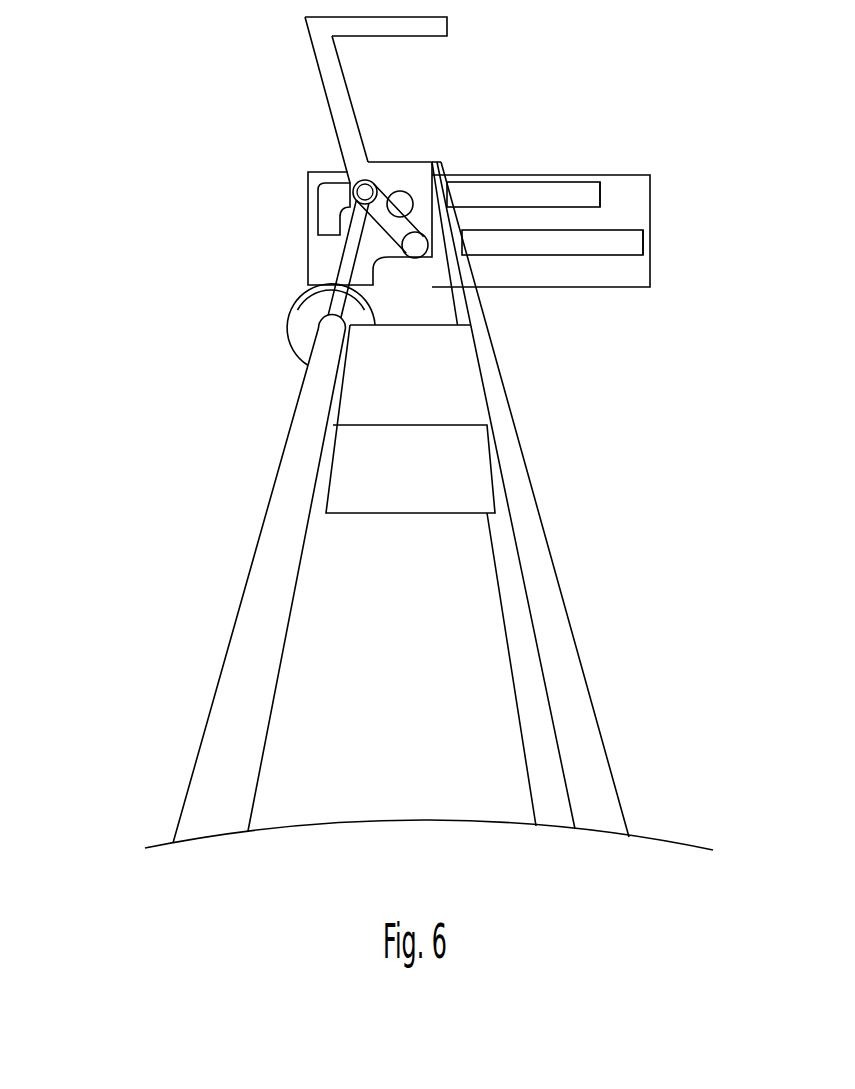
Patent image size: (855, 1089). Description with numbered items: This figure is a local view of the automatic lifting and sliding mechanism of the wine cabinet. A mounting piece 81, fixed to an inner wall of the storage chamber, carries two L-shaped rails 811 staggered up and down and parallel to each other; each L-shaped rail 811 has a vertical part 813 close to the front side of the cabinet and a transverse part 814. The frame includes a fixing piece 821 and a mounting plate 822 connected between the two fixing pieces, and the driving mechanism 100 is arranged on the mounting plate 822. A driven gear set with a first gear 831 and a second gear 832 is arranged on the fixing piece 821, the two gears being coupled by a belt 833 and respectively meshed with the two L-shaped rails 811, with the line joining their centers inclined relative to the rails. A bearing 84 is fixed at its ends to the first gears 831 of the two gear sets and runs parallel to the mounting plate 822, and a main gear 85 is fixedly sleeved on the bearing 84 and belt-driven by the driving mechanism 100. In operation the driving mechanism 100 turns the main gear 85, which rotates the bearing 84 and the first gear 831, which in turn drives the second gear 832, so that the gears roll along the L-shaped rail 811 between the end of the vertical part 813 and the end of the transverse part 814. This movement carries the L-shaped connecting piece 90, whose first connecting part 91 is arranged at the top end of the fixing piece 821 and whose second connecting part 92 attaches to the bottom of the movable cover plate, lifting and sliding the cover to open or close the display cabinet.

The connecting piece 90 is at (184, 16).
The first connecting part 91 is at (335, 76).
The second connecting part 92 is at (353, 18).
The mounting piece 81 is at (643, 211).
The L-shaped rail 811 is at (600, 193).
The transverse part 814 is at (513, 192).
The fixing piece 821 is at (397, 173).
The mounting plate 822 is at (540, 592).
The vertical part 813 is at (323, 213).
The first gear 831 is at (362, 188).
The second gear 832 is at (413, 244).
The belt 833 is at (362, 232).
The bearing 84 is at (260, 600).
The main gear 85 is at (300, 330).
The driving mechanism 100 is at (423, 373).